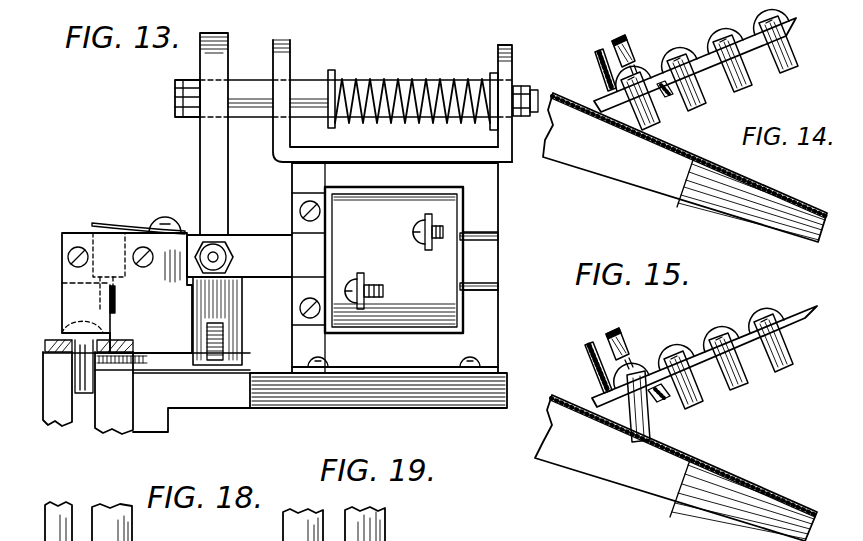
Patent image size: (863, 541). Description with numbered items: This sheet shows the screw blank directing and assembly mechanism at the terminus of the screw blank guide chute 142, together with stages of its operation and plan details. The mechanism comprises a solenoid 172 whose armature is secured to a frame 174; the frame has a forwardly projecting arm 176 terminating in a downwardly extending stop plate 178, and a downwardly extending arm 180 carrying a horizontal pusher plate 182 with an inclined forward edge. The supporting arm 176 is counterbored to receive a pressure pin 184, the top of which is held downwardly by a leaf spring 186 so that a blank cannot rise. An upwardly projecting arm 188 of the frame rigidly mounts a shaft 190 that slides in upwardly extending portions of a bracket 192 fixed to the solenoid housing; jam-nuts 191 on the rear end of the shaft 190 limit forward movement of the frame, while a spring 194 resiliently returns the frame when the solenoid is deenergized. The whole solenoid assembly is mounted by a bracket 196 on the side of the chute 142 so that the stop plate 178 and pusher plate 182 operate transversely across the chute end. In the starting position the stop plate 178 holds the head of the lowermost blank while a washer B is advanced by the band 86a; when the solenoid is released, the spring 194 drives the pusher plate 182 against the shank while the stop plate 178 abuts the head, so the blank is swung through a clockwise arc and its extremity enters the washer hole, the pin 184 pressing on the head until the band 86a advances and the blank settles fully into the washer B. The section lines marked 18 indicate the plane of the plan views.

In FIG. 13, the shaft 190 is at (247, 83).
In FIG. 13, the spring 194 is at (413, 83).
In FIG. 13, the jam-nuts 191 is at (519, 85).
In FIG. 13, the bracket 192 is at (462, 160).
In FIG. 13, the solenoid 172 is at (501, 256).
In FIG. 13, the upwardly projecting arm 188 is at (214, 204).
In FIG. 13, the frame 174 is at (148, 223).
In FIG. 13, the leaf spring 186 is at (110, 223).
In FIG. 13, the pressure pin 184 is at (88, 233).
In FIG. 14, the pressure pin 184 is at (631, 46).
In FIG. 15, the pressure pin 184 is at (621, 337).
In FIG. 13, the section line 18 is at (76, 297).
In FIG. 13, the forwardly projecting arm 176 is at (167, 278).
In FIG. 13, the stop plate 178 is at (100, 318).
In FIG. 14, the stop plate 178 is at (594, 57).
In FIG. 15, the stop plate 178 is at (583, 356).
In FIG. 13, the downwardly extending arm 180 is at (230, 322).
In FIG. 13, the pusher plate 182 is at (163, 364).
In FIG. 14, the pusher plate 182 is at (606, 119).
In FIG. 15, the pusher plate 182 is at (617, 430).
In FIG. 13, the bracket 196 is at (171, 399).
In FIG. 13, the screw blank guide chute 142 is at (123, 412).
In FIG. 14, the screw blank guide chute 142 is at (806, 40).
In FIG. 15, the screw blank guide chute 142 is at (793, 312).
In FIG. 18, the screw blank guide chute 142 is at (135, 521).
In FIG. 19, the screw blank guide chute 142 is at (390, 528).
In FIG. 14, the band 86a is at (693, 162).
In FIG. 15, the band 86a is at (727, 468).
In FIG. 14, the washer B is at (680, 139).
In FIG. 15, the washer B is at (669, 442).